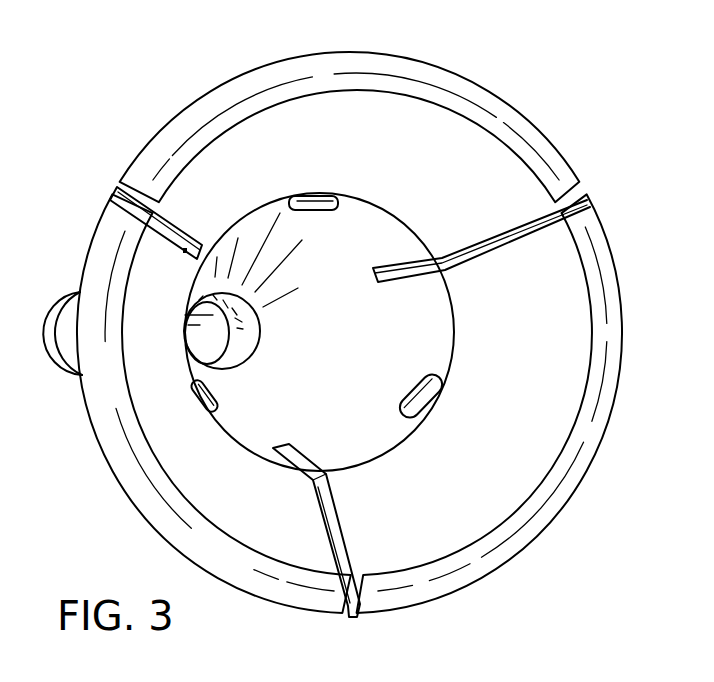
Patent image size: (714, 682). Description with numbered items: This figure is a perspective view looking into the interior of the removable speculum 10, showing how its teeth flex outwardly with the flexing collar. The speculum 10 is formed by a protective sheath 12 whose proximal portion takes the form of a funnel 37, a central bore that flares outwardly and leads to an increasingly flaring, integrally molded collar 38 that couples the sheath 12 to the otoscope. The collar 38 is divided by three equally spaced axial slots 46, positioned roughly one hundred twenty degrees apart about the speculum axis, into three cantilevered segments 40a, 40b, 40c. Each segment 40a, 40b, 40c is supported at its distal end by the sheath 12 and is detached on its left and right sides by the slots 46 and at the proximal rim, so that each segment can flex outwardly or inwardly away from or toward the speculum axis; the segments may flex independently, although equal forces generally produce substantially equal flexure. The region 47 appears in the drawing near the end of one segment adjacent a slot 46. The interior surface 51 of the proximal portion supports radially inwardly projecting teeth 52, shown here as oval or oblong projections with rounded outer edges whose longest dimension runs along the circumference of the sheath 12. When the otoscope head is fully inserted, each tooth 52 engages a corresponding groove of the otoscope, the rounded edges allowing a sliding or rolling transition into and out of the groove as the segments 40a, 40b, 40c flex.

The removable speculum 10 is at (597, 97).
The protective sheath 12 is at (439, 58).
The funnel 37 is at (426, 303).
The integrally molded collar 38 is at (550, 441).
The cantilevered segment 40a is at (182, 476).
The cantilevered segment 40b is at (290, 117).
The cantilevered segment 40c is at (512, 488).
The axial slot 46 is at (108, 192).
The ring segment end 47 is at (290, 608).
The interior surface 51 is at (390, 170).
The tooth 52 is at (316, 199).